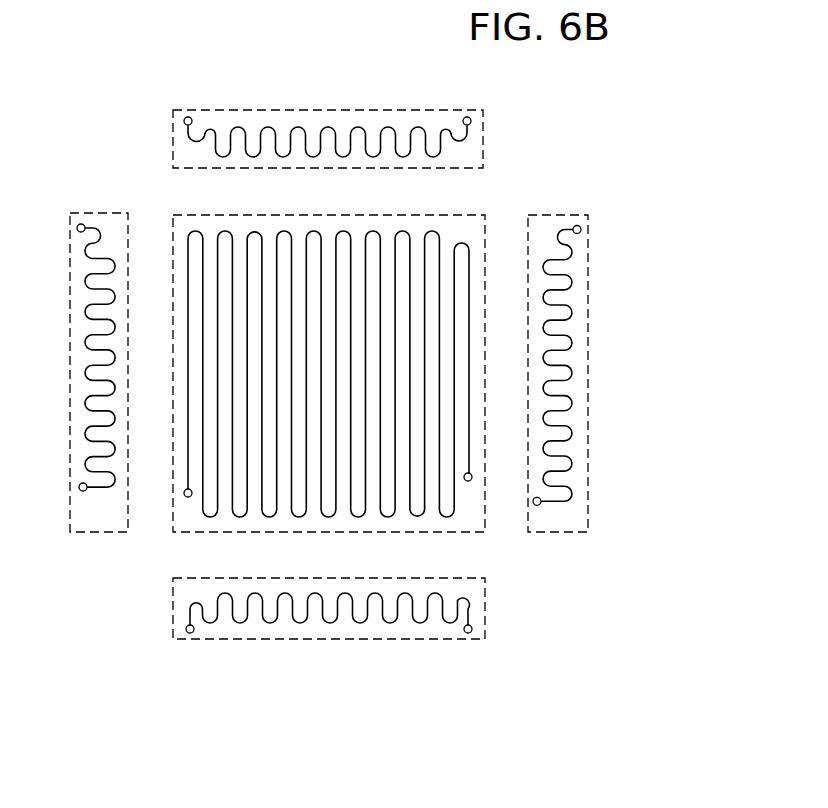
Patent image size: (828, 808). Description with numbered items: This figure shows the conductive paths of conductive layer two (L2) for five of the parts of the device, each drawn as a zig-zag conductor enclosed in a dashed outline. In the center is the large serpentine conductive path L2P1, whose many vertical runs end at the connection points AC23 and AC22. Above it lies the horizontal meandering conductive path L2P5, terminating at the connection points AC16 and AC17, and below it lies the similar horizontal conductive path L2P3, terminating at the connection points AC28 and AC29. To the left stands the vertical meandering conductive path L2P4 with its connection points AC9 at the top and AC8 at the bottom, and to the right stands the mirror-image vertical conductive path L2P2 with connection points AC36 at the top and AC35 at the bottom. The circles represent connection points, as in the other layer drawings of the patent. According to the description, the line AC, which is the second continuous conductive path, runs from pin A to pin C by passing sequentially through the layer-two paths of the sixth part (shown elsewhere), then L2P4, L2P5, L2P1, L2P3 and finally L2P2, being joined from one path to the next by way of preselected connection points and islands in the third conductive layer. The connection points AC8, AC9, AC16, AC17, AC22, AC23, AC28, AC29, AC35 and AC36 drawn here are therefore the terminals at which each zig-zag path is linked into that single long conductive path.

The conductive path in conductive layer 2 for part P1 L2P1 is at (387, 213).
The conductive path in conductive layer 2 for part P2 L2P2 is at (590, 332).
The conductive path in conductive layer 2 for part P3 L2P3 is at (390, 642).
The conductive path in conductive layer 2 for part P4 L2P4 is at (68, 322).
The conductive path in conductive layer 2 for part P5 L2P5 is at (386, 109).
The connection point AC8 is at (81, 491).
The connection point AC9 is at (77, 228).
The connection point AC16 is at (188, 116).
The connection point AC17 is at (468, 116).
The connection point AC22 is at (468, 481).
The connection point AC23 is at (188, 497).
The connection point AC28 is at (186, 629).
The connection point AC29 is at (472, 629).
The connection point AC35 is at (537, 506).
The connection point AC36 is at (581, 230).